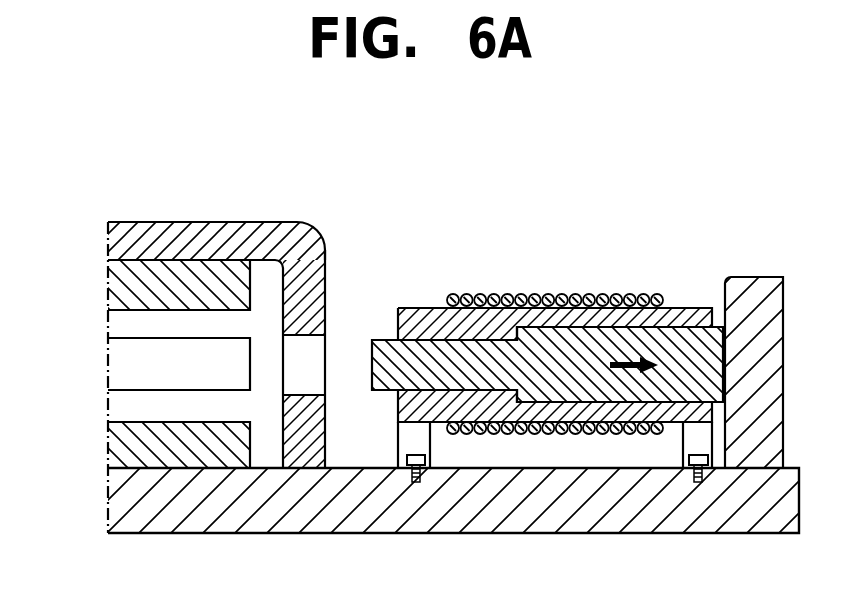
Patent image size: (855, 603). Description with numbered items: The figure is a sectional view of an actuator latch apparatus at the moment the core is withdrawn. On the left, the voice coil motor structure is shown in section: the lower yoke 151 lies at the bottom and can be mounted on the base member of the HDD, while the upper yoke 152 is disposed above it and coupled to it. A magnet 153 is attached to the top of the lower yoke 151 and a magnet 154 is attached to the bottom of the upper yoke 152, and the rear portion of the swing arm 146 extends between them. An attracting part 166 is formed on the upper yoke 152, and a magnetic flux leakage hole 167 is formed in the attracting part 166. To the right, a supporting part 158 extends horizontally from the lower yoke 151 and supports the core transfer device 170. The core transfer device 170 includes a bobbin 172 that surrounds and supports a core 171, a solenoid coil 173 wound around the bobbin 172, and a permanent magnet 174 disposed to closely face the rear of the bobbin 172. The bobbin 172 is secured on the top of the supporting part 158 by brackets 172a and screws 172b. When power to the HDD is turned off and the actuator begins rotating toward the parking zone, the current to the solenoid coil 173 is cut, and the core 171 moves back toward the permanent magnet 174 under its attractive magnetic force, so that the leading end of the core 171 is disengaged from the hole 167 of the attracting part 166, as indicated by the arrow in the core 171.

The swing arm 146 is at (96, 378).
The lower yoke 151 is at (108, 505).
The upper yoke 152 is at (108, 241).
The magnet 153 is at (108, 447).
The magnet 154 is at (108, 286).
The supporting part 158 is at (733, 507).
The attracting part 166 is at (323, 288).
The magnetic flux leakage hole 167 is at (315, 358).
The core transfer device 170 is at (544, 388).
The core 171 is at (385, 370).
The bobbin 172 is at (477, 300).
The brackets 172a is at (422, 438).
The screws 172b is at (690, 485).
The solenoid coil 173 is at (550, 298).
The permanent magnet 174 is at (760, 280).